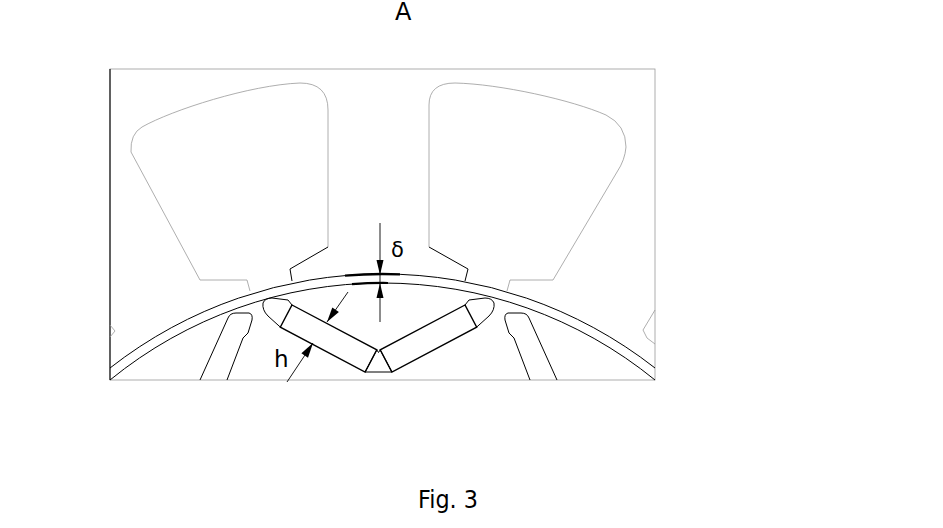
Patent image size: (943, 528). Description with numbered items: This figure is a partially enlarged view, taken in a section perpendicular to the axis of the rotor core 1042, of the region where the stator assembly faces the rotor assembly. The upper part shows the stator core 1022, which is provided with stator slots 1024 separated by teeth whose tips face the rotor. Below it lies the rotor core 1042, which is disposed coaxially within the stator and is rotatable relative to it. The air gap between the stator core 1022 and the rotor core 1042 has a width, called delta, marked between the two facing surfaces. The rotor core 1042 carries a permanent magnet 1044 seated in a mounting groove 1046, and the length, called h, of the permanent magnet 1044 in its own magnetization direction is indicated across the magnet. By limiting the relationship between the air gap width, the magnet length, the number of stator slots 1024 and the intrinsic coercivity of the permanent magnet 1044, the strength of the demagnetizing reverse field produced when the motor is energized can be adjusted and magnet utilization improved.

The stator core 1022 is at (645, 197).
The stator slot 1024 is at (590, 121).
The rotor core 1042 is at (612, 367).
The permanent magnet 1044 is at (448, 335).
The mounting groove 1046 is at (530, 338).